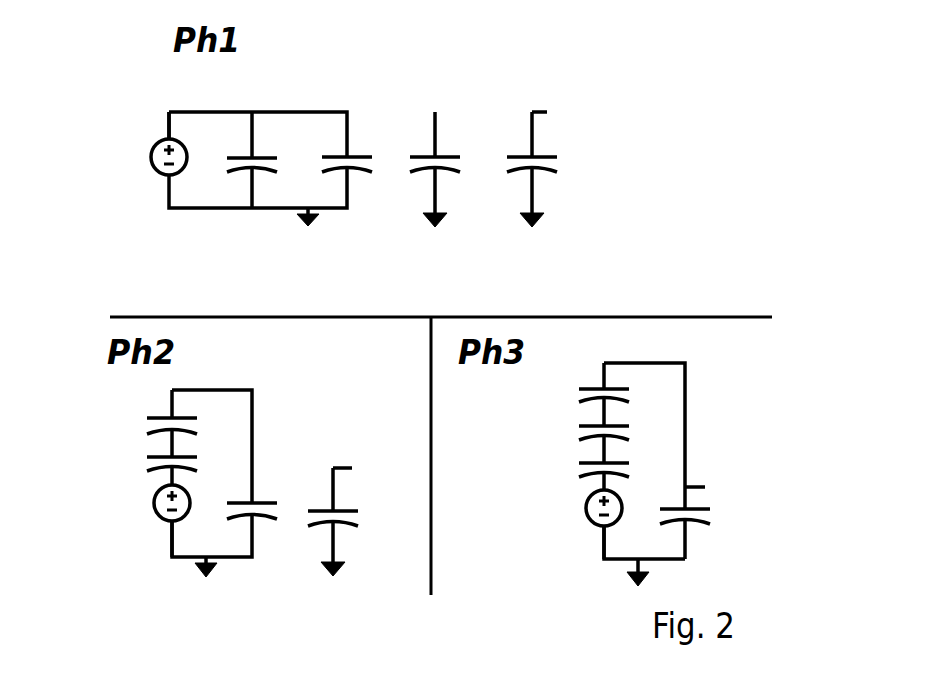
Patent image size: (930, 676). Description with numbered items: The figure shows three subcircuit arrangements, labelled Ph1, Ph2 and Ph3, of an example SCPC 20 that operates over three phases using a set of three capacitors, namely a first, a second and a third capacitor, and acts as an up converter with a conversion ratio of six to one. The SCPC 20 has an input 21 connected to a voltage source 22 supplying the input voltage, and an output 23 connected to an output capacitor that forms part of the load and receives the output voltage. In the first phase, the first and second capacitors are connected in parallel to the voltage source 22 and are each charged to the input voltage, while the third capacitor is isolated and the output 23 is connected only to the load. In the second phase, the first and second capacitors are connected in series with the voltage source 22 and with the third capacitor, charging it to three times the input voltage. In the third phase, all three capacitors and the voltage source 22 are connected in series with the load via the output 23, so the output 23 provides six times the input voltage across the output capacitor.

The SCPC 20 is at (663, 238).
The input 21 is at (165, 123).
The voltage source 22 is at (162, 177).
The output 23 is at (533, 125).